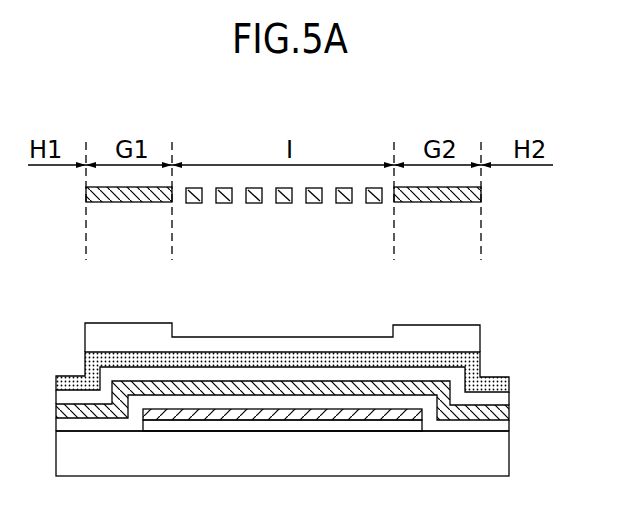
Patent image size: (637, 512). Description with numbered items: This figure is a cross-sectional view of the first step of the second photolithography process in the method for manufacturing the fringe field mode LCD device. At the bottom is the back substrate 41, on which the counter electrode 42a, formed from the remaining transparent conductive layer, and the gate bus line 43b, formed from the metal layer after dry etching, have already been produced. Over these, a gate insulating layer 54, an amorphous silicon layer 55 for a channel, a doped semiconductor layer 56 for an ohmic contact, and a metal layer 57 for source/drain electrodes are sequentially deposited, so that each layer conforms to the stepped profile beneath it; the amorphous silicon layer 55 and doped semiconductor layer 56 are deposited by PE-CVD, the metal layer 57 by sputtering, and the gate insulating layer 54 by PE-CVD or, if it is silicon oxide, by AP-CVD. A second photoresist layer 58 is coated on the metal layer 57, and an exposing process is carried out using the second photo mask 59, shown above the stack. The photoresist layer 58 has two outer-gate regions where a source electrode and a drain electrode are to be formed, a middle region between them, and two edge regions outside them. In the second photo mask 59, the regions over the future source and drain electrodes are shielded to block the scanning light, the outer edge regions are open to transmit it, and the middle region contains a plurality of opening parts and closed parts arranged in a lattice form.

The second photo mask 59 is at (481, 192).
The back substrate 41 is at (502, 453).
The gate insulating layer 54 is at (502, 427).
The counter electrode 42a is at (237, 427).
The gate bus line 43b is at (328, 413).
The amorphous silicon layer 55 is at (502, 413).
The doped semiconductor layer 56 is at (502, 397).
The metal layer for source/drain electrodes 57 is at (477, 360).
The second photoresist layer 58 is at (472, 337).